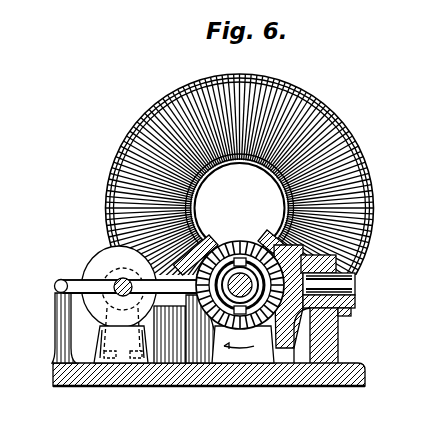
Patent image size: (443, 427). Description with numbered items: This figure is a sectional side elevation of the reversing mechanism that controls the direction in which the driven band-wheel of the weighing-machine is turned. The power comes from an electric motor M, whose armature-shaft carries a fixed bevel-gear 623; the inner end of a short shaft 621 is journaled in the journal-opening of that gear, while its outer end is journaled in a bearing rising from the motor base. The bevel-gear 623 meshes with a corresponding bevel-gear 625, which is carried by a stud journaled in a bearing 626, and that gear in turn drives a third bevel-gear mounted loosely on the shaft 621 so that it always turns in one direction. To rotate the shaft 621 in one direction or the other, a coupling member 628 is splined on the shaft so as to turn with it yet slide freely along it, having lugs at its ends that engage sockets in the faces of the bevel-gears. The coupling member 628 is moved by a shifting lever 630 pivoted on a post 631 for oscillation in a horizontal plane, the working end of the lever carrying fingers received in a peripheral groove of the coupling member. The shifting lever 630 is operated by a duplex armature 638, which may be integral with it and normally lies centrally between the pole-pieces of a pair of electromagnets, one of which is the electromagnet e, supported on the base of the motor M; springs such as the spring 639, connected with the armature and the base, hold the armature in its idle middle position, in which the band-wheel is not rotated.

The motor M is at (203, 207).
The bearing 626 is at (364, 237).
The coupling member 628 is at (160, 266).
The bevel-gear 623 is at (229, 250).
The electromagnet e is at (119, 287).
The spring 639 is at (52, 272).
The duplex armature 638 is at (108, 283).
The short shaft 621 is at (290, 306).
The bevel-gear 625 is at (300, 320).
The post 631 is at (158, 355).
The shifting lever 630 is at (203, 365).